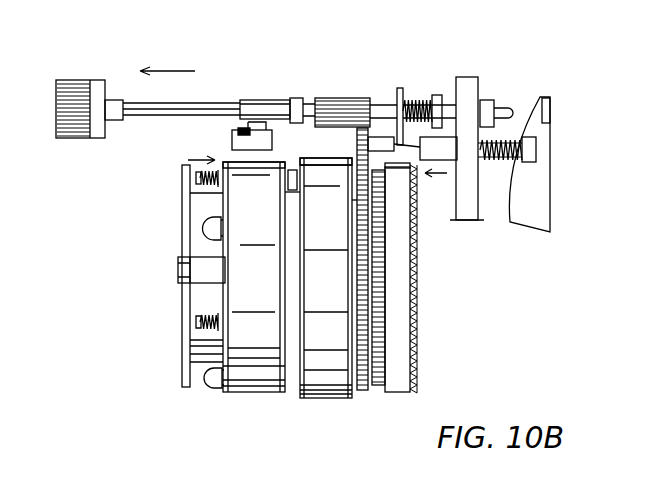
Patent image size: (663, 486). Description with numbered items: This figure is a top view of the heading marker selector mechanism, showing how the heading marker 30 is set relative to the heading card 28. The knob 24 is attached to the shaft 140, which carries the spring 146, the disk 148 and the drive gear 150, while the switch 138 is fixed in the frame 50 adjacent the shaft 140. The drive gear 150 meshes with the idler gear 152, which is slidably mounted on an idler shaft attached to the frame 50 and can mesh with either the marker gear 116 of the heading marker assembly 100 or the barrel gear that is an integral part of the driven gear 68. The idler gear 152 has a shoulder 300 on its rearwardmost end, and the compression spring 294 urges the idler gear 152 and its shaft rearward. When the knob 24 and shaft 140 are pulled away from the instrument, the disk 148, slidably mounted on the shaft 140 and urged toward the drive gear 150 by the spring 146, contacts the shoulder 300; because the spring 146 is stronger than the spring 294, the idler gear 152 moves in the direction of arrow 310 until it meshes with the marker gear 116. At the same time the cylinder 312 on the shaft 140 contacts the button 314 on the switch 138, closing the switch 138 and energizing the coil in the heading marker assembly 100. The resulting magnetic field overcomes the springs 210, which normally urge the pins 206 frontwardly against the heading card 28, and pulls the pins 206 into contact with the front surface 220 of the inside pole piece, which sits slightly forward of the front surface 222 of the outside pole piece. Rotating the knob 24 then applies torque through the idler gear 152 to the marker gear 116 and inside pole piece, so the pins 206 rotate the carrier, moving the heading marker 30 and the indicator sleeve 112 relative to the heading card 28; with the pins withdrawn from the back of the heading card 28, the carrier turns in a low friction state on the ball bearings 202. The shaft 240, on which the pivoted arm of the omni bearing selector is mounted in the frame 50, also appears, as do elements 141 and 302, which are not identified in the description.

The knob 24 is at (79, 102).
The heading card 28 is at (182, 206).
The heading marker 30 is at (186, 272).
The frame 50 is at (472, 86).
The driven gear 68 is at (410, 286).
The heading marker assembly 100 is at (340, 289).
The indicator sleeve 112 is at (257, 372).
The marker gear 116 is at (357, 208).
The switch 138 is at (232, 136).
The shaft 140 is at (384, 110).
The pin 141 is at (512, 106).
The spring 146 is at (426, 100).
The disk 148 is at (400, 88).
The drive gear 150 is at (330, 106).
The idler gear 152 is at (368, 144).
The ball bearings 202 is at (218, 388).
The pin 206 is at (290, 182).
The spring 210 is at (211, 186).
The front surface 220 is at (294, 196).
The front surface 222 is at (242, 167).
The shaft 240 is at (406, 168).
The compression spring 294 is at (520, 160).
The shoulder 300 is at (356, 158).
The rack 302 is at (382, 302).
The arrow 310 is at (440, 176).
The cylinder 312 is at (265, 100).
The button 314 is at (243, 130).